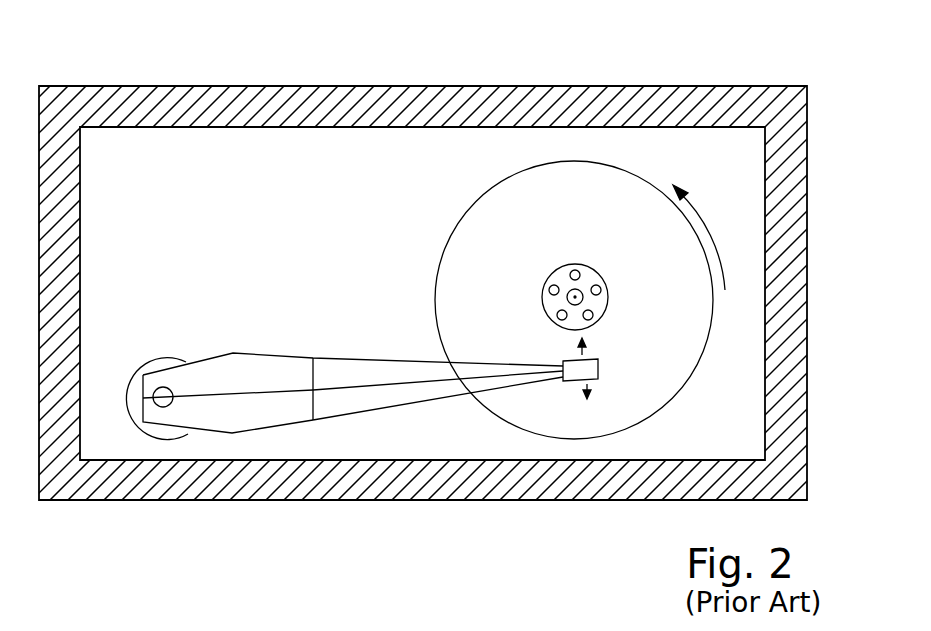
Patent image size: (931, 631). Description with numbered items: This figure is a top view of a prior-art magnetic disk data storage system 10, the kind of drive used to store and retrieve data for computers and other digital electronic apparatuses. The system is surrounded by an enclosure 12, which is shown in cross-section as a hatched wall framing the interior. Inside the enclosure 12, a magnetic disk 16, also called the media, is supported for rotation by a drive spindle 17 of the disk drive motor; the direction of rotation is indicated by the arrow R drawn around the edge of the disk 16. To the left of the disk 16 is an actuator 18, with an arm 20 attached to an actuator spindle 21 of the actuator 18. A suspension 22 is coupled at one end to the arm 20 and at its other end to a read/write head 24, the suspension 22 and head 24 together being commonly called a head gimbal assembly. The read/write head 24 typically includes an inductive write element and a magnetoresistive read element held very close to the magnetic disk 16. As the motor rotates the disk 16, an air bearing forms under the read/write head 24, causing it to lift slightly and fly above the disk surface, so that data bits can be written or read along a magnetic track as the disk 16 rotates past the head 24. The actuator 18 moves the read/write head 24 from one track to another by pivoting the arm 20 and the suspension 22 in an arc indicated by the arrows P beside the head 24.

The magnetic disk data storage system 10 is at (465, 300).
The enclosure 12 is at (398, 492).
The magnetic disk 16 is at (596, 216).
The drive spindle 17 is at (598, 279).
The actuator 18 is at (172, 360).
The arm 20 is at (284, 367).
The actuator spindle 21 is at (155, 397).
The suspension 22 is at (378, 398).
The read/write head 24 is at (599, 372).